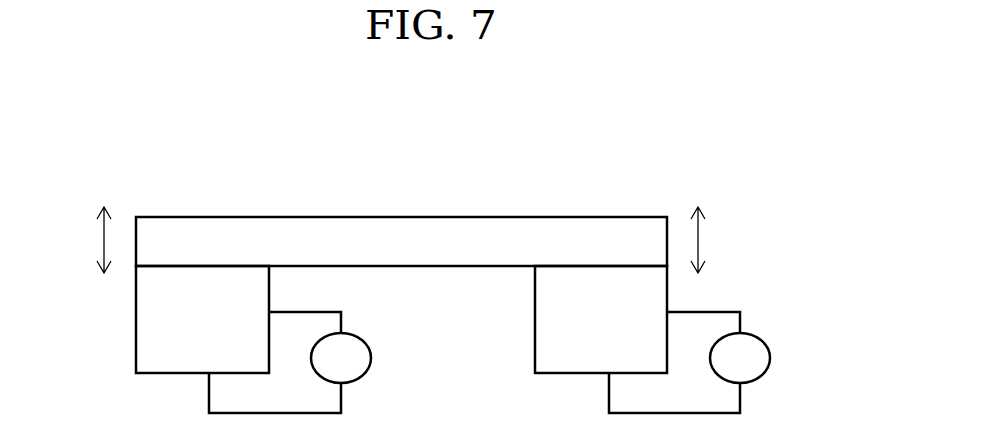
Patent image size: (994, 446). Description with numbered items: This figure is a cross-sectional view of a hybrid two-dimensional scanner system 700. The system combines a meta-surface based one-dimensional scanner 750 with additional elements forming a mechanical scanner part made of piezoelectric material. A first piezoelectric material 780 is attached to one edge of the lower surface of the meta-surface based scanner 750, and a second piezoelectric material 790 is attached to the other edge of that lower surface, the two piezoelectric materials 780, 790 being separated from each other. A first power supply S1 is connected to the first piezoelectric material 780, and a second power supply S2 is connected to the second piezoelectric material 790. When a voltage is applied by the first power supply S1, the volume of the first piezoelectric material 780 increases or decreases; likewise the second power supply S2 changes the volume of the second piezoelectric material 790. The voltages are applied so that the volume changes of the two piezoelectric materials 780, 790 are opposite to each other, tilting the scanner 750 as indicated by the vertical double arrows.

The hybrid 2D scanner system 700 is at (773, 172).
The meta-surface based 1D scanner 750 is at (402, 222).
The first piezoelectric material 780 is at (136, 320).
The second piezoelectric material 790 is at (535, 321).
The first power supply S1 is at (362, 380).
The second power supply S2 is at (761, 380).